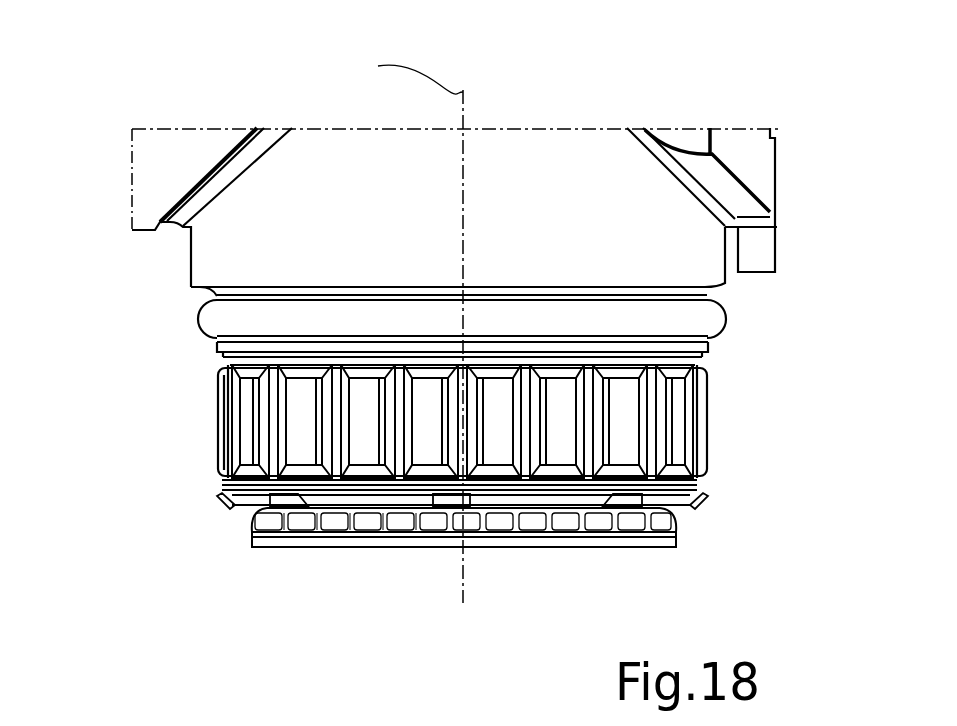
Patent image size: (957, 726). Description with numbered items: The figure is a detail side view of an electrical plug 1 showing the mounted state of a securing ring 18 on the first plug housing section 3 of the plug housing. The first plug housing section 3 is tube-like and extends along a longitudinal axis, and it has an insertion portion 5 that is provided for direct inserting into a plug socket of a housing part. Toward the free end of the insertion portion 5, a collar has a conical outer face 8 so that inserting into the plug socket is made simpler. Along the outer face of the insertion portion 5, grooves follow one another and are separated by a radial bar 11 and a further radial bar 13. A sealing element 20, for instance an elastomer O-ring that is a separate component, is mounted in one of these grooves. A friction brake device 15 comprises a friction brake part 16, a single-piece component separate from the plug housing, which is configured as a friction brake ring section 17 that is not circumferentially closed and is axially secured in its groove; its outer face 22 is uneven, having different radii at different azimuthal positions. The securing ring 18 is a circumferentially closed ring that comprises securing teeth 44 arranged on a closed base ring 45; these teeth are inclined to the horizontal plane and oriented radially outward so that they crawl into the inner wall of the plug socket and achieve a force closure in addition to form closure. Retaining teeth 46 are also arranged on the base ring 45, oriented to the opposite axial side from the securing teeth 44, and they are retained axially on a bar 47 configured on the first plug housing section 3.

The electrical plug 1 is at (692, 105).
The first plug housing section 3 is at (795, 218).
The insertion portion 5 is at (430, 412).
The conical outer face 8 is at (255, 548).
The radial bar 11 is at (226, 497).
The radial bar 13 is at (216, 352).
The friction brake device 15 is at (675, 425).
The friction brake part 16 is at (196, 436).
The friction brake ring section 17 is at (196, 414).
The securing ring 18 is at (507, 544).
The sealing element 20 is at (705, 318).
The outer face 22 is at (212, 384).
The securing teeth 44 is at (220, 500).
The base ring 45 is at (396, 522).
The retaining teeth 46 is at (368, 522).
The bar 47 is at (475, 536).